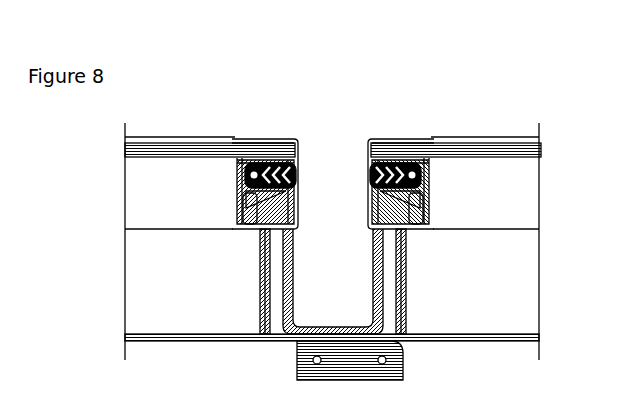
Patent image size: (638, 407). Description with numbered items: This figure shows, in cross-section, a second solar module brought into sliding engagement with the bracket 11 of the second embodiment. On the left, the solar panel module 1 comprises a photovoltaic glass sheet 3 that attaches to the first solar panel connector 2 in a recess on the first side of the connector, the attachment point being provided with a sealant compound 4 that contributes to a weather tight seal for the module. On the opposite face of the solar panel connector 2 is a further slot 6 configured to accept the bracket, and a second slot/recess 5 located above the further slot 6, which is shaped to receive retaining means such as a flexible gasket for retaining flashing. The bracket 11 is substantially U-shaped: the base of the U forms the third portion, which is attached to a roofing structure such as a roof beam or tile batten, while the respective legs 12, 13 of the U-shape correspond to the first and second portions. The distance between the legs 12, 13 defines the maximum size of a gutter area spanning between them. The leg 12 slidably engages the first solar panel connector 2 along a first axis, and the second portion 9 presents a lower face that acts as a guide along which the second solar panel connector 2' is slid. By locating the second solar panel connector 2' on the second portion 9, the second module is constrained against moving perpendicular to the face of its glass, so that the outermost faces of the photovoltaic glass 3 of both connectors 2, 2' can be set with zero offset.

The solar panel module 1 is at (125, 218).
The solar panel connector 2 is at (332, 299).
The second solar panel connector 2' is at (415, 281).
The photovoltaic glass sheet 3 is at (163, 142).
The sealant compound 4 is at (250, 140).
The second slot/recess 5 is at (371, 168).
The further slot 6 is at (387, 209).
The second portion 9 is at (407, 217).
The bracket 11 is at (385, 380).
The leg 12 is at (293, 282).
The leg 13 is at (372, 282).